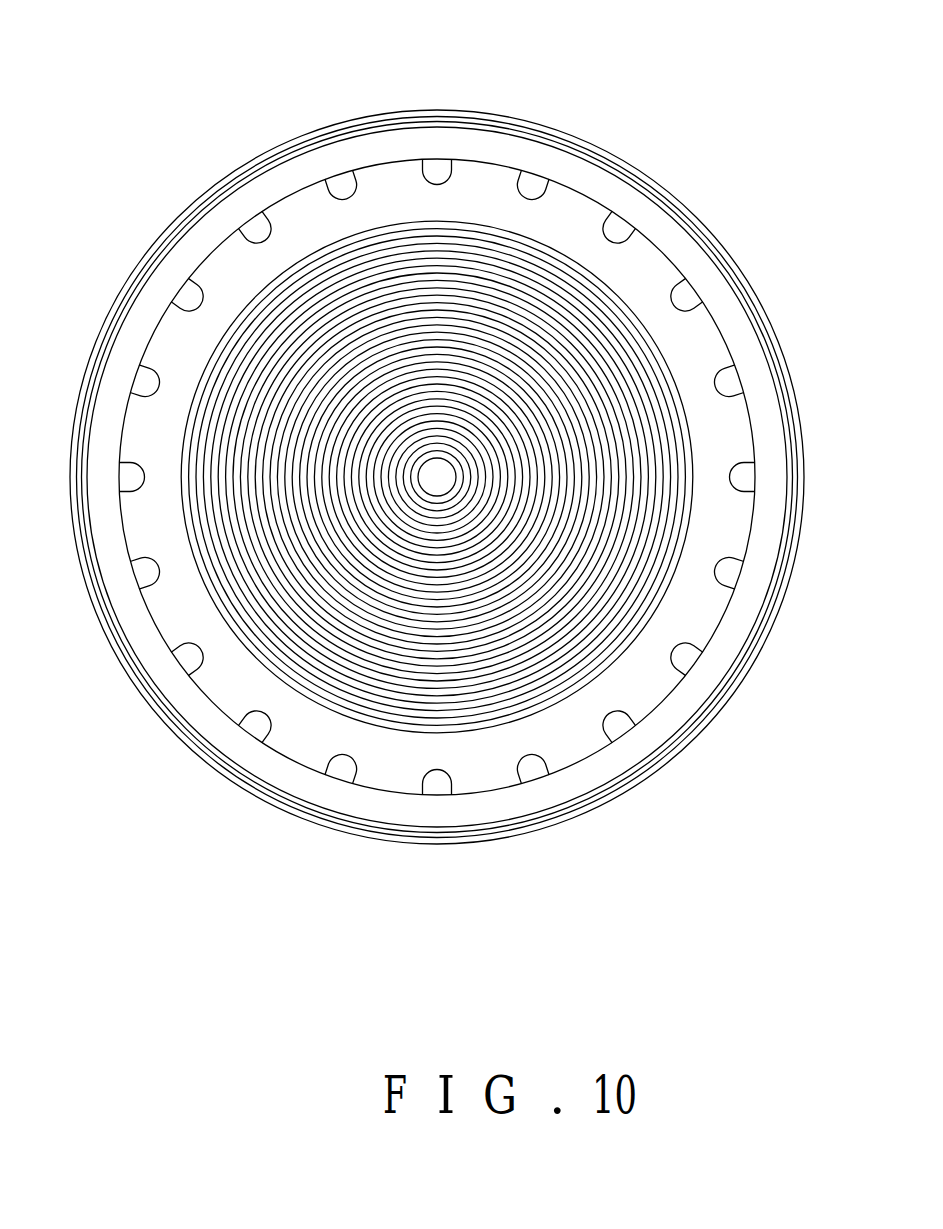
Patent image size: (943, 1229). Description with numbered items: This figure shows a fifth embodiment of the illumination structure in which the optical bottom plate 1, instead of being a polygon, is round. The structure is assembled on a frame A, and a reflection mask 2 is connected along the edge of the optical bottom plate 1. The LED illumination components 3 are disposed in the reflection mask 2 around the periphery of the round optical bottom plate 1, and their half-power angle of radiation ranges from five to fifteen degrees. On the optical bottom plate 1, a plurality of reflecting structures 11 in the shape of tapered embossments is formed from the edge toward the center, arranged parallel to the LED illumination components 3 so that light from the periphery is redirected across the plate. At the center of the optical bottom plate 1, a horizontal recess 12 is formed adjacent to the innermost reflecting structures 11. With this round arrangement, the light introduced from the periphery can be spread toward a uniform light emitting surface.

The optical bottom plate 1 is at (557, 217).
The reflection mask 2 is at (757, 293).
The LED illumination components 3 is at (690, 297).
The frame A is at (672, 188).
The reflecting structures 11 is at (507, 305).
The horizontal recess 12 is at (438, 468).